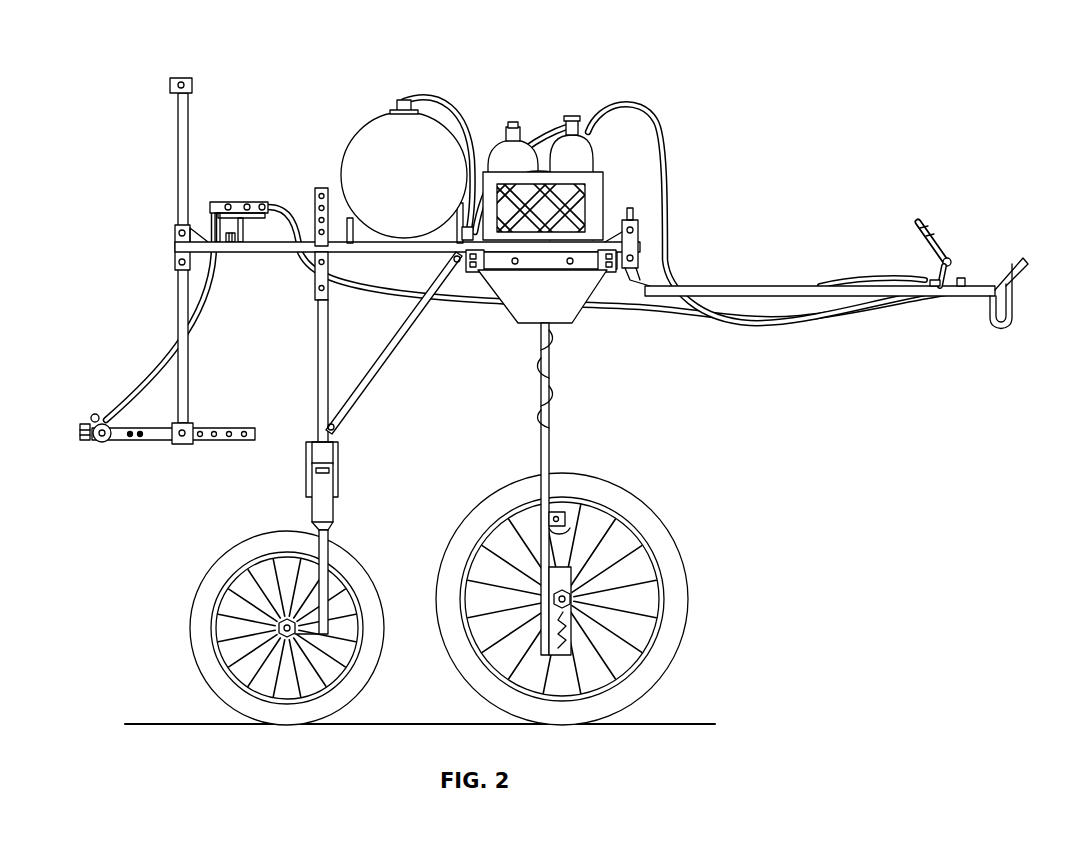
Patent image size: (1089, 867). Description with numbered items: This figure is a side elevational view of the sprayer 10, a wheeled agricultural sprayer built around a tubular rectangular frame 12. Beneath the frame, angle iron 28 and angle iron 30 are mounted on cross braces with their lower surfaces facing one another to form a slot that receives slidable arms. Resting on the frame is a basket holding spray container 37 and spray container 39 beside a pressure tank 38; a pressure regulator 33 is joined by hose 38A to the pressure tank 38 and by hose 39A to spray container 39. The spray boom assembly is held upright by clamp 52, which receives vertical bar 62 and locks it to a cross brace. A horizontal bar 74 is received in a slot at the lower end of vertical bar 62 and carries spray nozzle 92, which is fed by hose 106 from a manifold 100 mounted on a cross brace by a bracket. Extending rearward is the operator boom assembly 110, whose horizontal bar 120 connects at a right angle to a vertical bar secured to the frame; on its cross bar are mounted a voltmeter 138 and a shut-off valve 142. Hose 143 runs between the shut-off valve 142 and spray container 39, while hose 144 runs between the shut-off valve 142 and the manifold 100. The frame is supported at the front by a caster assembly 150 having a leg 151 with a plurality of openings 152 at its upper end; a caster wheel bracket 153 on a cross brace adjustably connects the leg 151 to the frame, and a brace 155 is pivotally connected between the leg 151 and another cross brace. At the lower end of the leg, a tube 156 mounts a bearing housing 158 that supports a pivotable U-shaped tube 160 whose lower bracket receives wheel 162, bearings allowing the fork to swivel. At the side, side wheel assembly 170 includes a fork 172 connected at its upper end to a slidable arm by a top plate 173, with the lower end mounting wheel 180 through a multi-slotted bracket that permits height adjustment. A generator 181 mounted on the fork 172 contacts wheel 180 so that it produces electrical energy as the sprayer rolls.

The sprayer 10 is at (730, 142).
The rectangular frame 12 is at (258, 258).
The angle iron 28 is at (472, 268).
The angle iron 30 is at (600, 268).
The pressure regulator 33 is at (465, 230).
The spray container 37 is at (502, 152).
The pressure tank 38 is at (404, 171).
The hose 38A is at (440, 110).
The spray container 39 is at (593, 158).
The hose 39A is at (535, 135).
The clamp 52 is at (182, 248).
The vertical bar 62 is at (188, 362).
The horizontal bar 74 is at (140, 440).
The spray nozzle 92 is at (78, 440).
The manifold 100 is at (262, 200).
The hose 106 is at (158, 374).
The operator boom assembly 110 is at (834, 278).
The horizontal bar 120 is at (784, 286).
The voltmeter 138 is at (1014, 260).
The shut-off valve 142 is at (926, 236).
The hose 143 is at (652, 112).
The hose 144 is at (382, 292).
The caster assembly 150 is at (214, 545).
The leg 151 is at (318, 375).
The openings 152 is at (314, 194).
The caster wheel bracket 153 is at (314, 290).
The brace 155 is at (402, 338).
The tube 156 is at (338, 458).
The bearing housing 158 is at (314, 508).
The U-shaped tube 160 is at (330, 532).
The wheel 162 is at (190, 632).
The side wheel assembly 170 is at (645, 480).
The fork 172 is at (548, 410).
The top plate 173 is at (520, 302).
The wheel 180 is at (688, 540).
The generator 181 is at (572, 520).